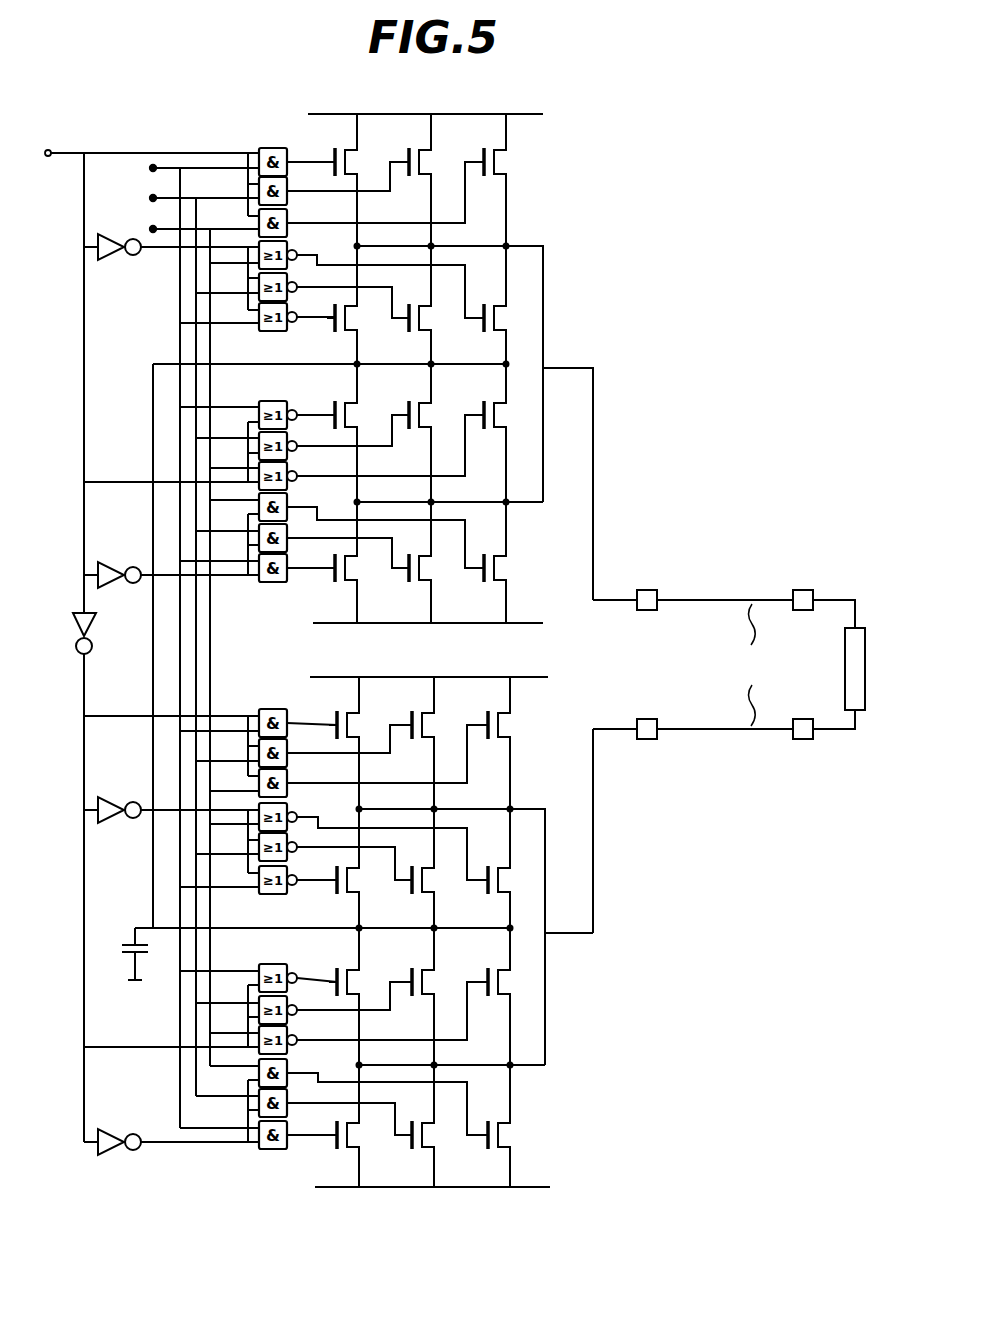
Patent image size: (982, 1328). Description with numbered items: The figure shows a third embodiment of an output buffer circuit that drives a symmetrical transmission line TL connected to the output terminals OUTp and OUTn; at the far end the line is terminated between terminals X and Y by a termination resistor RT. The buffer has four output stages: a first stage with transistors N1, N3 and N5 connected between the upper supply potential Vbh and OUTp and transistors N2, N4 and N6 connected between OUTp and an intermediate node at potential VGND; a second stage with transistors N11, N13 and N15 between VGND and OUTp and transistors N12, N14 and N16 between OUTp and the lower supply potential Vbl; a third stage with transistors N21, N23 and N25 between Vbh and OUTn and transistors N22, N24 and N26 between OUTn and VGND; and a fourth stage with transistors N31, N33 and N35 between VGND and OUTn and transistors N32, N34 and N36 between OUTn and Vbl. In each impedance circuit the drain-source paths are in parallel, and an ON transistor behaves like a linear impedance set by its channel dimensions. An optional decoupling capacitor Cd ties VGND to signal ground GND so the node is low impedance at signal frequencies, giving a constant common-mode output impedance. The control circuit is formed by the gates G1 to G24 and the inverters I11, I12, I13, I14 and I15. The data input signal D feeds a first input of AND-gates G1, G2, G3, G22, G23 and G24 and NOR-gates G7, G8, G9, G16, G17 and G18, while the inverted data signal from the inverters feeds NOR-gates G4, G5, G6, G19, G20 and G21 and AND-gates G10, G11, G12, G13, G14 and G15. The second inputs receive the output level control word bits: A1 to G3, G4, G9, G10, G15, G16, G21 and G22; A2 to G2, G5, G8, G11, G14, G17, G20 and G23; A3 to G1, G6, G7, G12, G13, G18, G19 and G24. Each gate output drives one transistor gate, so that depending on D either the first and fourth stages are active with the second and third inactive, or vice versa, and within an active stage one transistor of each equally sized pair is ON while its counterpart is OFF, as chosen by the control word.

The input data signal D is at (62, 140).
The output level control word bit input A1 is at (133, 228).
The output level control word bit input A2 is at (133, 196).
The output level control word bit input A3 is at (133, 166).
The inverter I11 is at (114, 251).
The inverter I12 is at (116, 572).
The inverter I13 is at (93, 626).
The inverter I14 is at (118, 807).
The inverter I15 is at (124, 1138).
The AND-gate G1 is at (285, 147).
The AND-gate G2 is at (289, 197).
The AND-gate G3 is at (289, 228).
The NOR-gate G4 is at (289, 260).
The NOR-gate G5 is at (289, 290).
The NOR-gate G6 is at (286, 324).
The NOR-gate G7 is at (285, 394).
The NOR-gate G8 is at (291, 447).
The NOR-gate G9 is at (293, 479).
The AND-gate G10 is at (292, 507).
The AND-gate G11 is at (292, 545).
The AND-gate G12 is at (285, 580).
The AND-gate G13 is at (285, 702).
The AND-gate G14 is at (289, 755).
The AND-gate G15 is at (289, 785).
The NOR-gate G16 is at (289, 815).
The NOR-gate G17 is at (289, 855).
The NOR-gate G18 is at (285, 892).
The NOR-gate G19 is at (289, 974).
The NOR-gate G20 is at (294, 1010).
The NOR-gate G21 is at (294, 1038).
The AND-gate G22 is at (289, 1072).
The AND-gate G23 is at (289, 1110).
The AND-gate G24 is at (285, 1147).
The transistor N1 is at (500, 154).
The transistor N2 is at (501, 328).
The transistor N3 is at (423, 154).
The transistor N4 is at (423, 328).
The transistor N5 is at (349, 154).
The transistor N6 is at (350, 328).
The transistor N11 is at (493, 406).
The transistor N12 is at (493, 579).
The transistor N13 is at (419, 406).
The transistor N14 is at (419, 579).
The transistor N15 is at (342, 406).
The transistor N16 is at (343, 579).
The transistor N21 is at (498, 715).
The transistor N22 is at (496, 890).
The transistor N23 is at (421, 715).
The transistor N24 is at (421, 890).
The transistor N25 is at (346, 715).
The transistor N26 is at (346, 890).
The transistor N31 is at (498, 970).
The transistor N32 is at (497, 1145).
The transistor N33 is at (421, 970).
The transistor N34 is at (421, 1145).
The transistor N35 is at (346, 970).
The transistor N36 is at (346, 1145).
The upper power supply potential Vbh is at (428, 382).
The lower power supply potential Vbl is at (431, 917).
The intermediate node potential VGND is at (322, 646).
The decoupling capacitor Cd is at (122, 949).
The signal ground GND is at (131, 998).
The output terminal OUTp is at (649, 588).
The second output terminal OUTn is at (647, 740).
The transmission line terminal X is at (819, 591).
The transmission line terminal Y is at (819, 736).
The symmetrical transmission line TL is at (749, 665).
The termination resistor RT is at (870, 669).